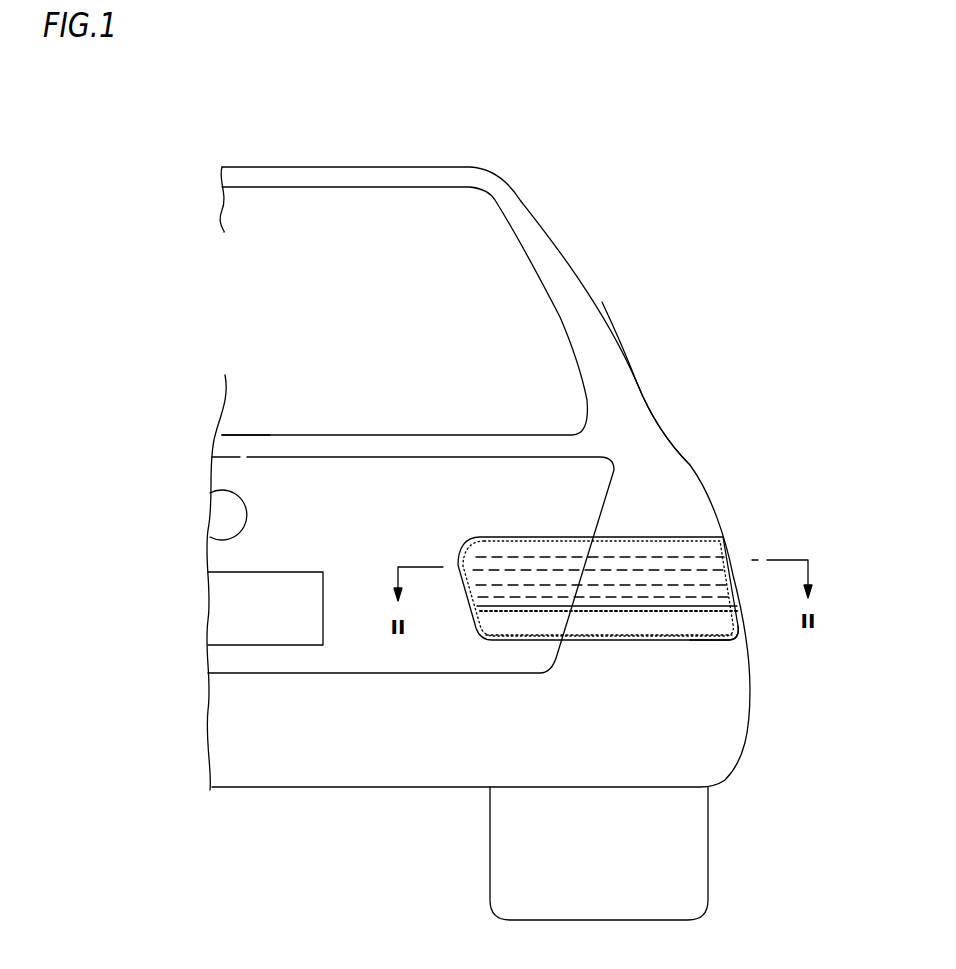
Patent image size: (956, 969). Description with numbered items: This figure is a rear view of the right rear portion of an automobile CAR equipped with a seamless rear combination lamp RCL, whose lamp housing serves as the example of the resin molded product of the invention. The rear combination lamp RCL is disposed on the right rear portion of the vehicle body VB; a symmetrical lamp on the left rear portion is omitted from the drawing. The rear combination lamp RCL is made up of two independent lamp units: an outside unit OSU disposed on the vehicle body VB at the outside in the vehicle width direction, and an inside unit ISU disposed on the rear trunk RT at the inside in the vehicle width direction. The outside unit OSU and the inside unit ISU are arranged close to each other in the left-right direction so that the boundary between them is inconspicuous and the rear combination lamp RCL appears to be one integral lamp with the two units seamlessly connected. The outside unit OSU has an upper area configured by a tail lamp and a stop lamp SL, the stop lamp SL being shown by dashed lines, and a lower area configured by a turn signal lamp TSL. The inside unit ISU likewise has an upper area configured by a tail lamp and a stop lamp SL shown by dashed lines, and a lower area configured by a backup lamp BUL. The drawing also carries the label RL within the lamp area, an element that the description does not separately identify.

The automobile CAR is at (557, 240).
The vehicle body VB is at (623, 407).
The rear combination lamp RCL is at (643, 524).
The rear trunk RT is at (297, 490).
The stop lamp SL is at (533, 540).
The rolled-up fold lines of airbag RL is at (490, 590).
The backup lamp BUL is at (478, 625).
The inside unit ISU is at (527, 647).
The outside unit OSU is at (687, 641).
The turn signal lamp TSL is at (720, 638).